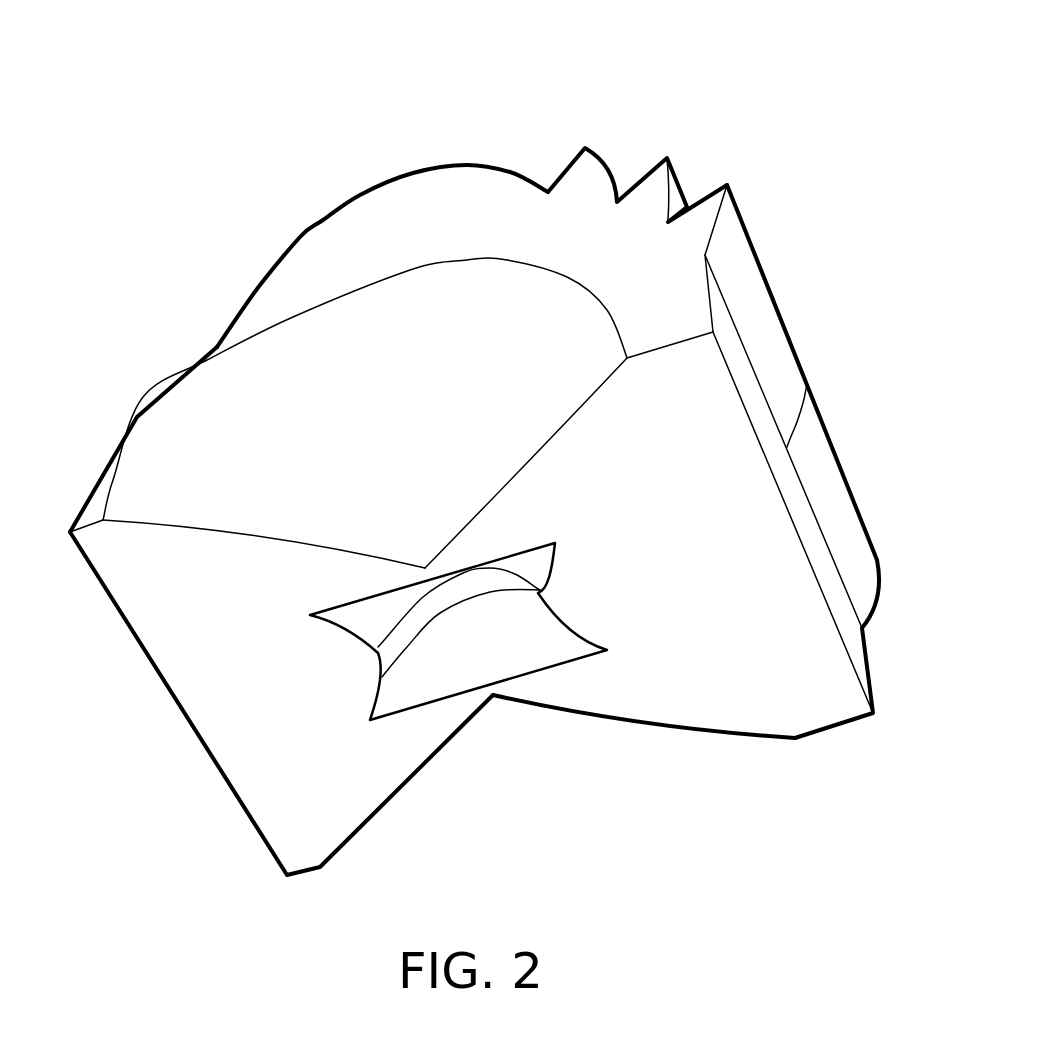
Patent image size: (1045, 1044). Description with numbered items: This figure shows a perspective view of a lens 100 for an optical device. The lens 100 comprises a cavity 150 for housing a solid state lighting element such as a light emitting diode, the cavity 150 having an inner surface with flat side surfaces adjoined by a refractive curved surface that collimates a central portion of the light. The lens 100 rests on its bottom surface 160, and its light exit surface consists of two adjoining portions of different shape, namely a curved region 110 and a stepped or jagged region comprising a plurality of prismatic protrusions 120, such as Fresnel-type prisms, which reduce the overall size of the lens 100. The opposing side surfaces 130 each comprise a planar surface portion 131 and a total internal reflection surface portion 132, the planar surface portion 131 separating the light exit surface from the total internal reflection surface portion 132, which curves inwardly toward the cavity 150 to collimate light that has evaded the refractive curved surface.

The lens 100 is at (763, 90).
The curved region 110 is at (515, 172).
The prismatic protrusions 120 is at (755, 295).
The opposing side surfaces 130 is at (323, 220).
The planar surface portion 131 is at (413, 210).
The total internal reflection surface portion 132 is at (223, 400).
The cavity 150 is at (508, 645).
The bottom surface 160 is at (732, 657).